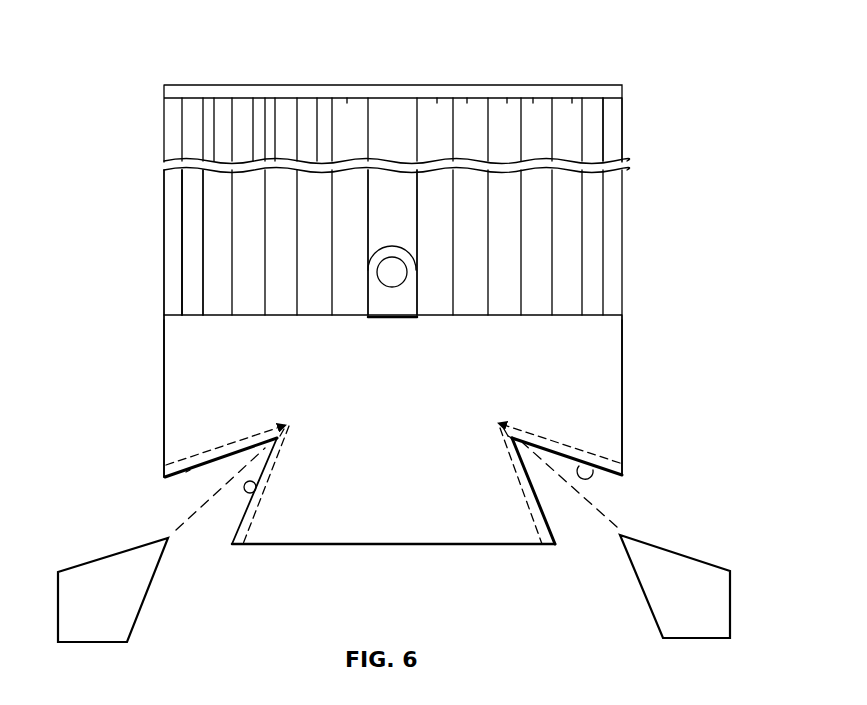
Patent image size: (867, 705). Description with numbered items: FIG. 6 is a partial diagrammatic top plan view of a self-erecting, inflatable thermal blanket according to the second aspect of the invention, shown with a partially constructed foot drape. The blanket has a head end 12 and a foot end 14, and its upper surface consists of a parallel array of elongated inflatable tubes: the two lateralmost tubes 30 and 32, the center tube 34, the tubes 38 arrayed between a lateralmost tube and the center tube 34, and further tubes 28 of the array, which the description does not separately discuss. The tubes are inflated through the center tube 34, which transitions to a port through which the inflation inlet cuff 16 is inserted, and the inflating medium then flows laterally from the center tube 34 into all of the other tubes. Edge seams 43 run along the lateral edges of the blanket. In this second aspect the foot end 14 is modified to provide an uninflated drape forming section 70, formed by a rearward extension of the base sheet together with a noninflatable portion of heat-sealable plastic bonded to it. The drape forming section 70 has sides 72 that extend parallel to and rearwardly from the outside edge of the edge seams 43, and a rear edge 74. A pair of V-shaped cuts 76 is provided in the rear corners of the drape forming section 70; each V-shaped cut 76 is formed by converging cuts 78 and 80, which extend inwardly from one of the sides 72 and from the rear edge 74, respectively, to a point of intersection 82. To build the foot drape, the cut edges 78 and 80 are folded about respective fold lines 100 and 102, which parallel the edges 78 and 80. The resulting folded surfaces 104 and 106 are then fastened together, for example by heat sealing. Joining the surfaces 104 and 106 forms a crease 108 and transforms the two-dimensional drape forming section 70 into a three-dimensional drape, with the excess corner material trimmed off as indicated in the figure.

The head end 12 is at (390, 85).
The foot end 14 is at (385, 316).
The inflation inlet cuff 16 is at (400, 305).
The flute channels 28 is at (253, 98).
The lateralmost tube 30 is at (188, 247).
The lateralmost tube 32 is at (598, 206).
The center tube 34 is at (380, 219).
The tubes 38 is at (347, 103).
The edge seams 43 is at (612, 128).
The drape forming section 70 is at (610, 332).
The sides 72 is at (624, 373).
The rear edge 74 is at (380, 545).
The V-shaped cuts 76 is at (222, 514).
The cut 78 is at (188, 473).
The cut 80 is at (256, 491).
The point of intersection 82 is at (512, 436).
The fold line 100 is at (277, 468).
The fold line 102 is at (225, 447).
The folded surface 104 is at (248, 525).
The folded surface 106 is at (165, 472).
The crease 108 is at (283, 432).